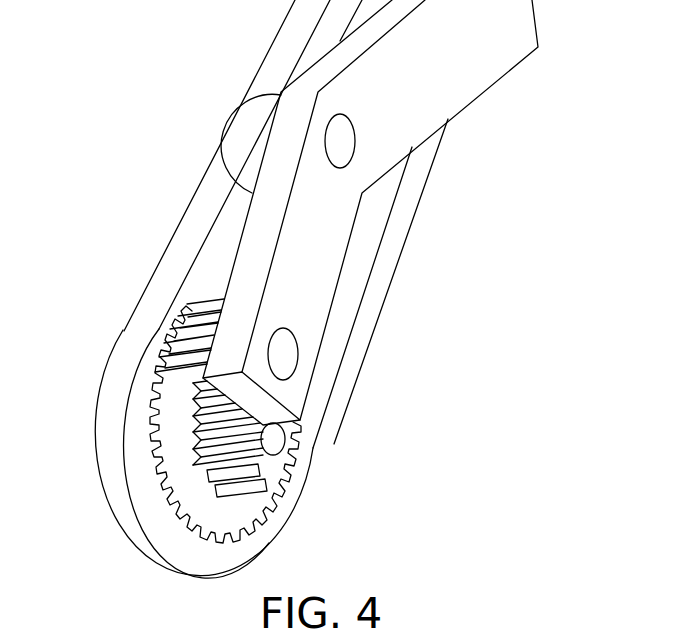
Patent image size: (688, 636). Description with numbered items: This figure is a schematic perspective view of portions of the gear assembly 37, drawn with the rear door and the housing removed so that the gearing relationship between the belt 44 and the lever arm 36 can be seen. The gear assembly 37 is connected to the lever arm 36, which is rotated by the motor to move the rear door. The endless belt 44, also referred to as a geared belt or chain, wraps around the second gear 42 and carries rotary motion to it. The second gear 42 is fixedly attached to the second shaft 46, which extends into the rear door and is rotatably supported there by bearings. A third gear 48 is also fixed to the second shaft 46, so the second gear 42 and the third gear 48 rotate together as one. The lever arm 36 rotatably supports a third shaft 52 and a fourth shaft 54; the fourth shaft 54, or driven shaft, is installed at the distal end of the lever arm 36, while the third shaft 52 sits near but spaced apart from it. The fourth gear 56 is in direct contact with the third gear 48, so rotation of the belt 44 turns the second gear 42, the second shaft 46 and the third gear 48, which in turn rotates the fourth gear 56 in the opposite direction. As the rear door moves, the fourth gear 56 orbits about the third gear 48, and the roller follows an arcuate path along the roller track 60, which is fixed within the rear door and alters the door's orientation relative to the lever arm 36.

The lever arm 36 is at (477, 58).
The gear assembly 37 is at (126, 189).
The second gear 42 is at (205, 416).
The belt 44 is at (240, 553).
The second shaft 46 is at (273, 438).
The third gear 48 is at (232, 474).
The third shaft 52 is at (342, 140).
The fourth shaft 54 is at (284, 363).
The fourth gear 56 is at (187, 330).
The roller track 60 is at (243, 130).